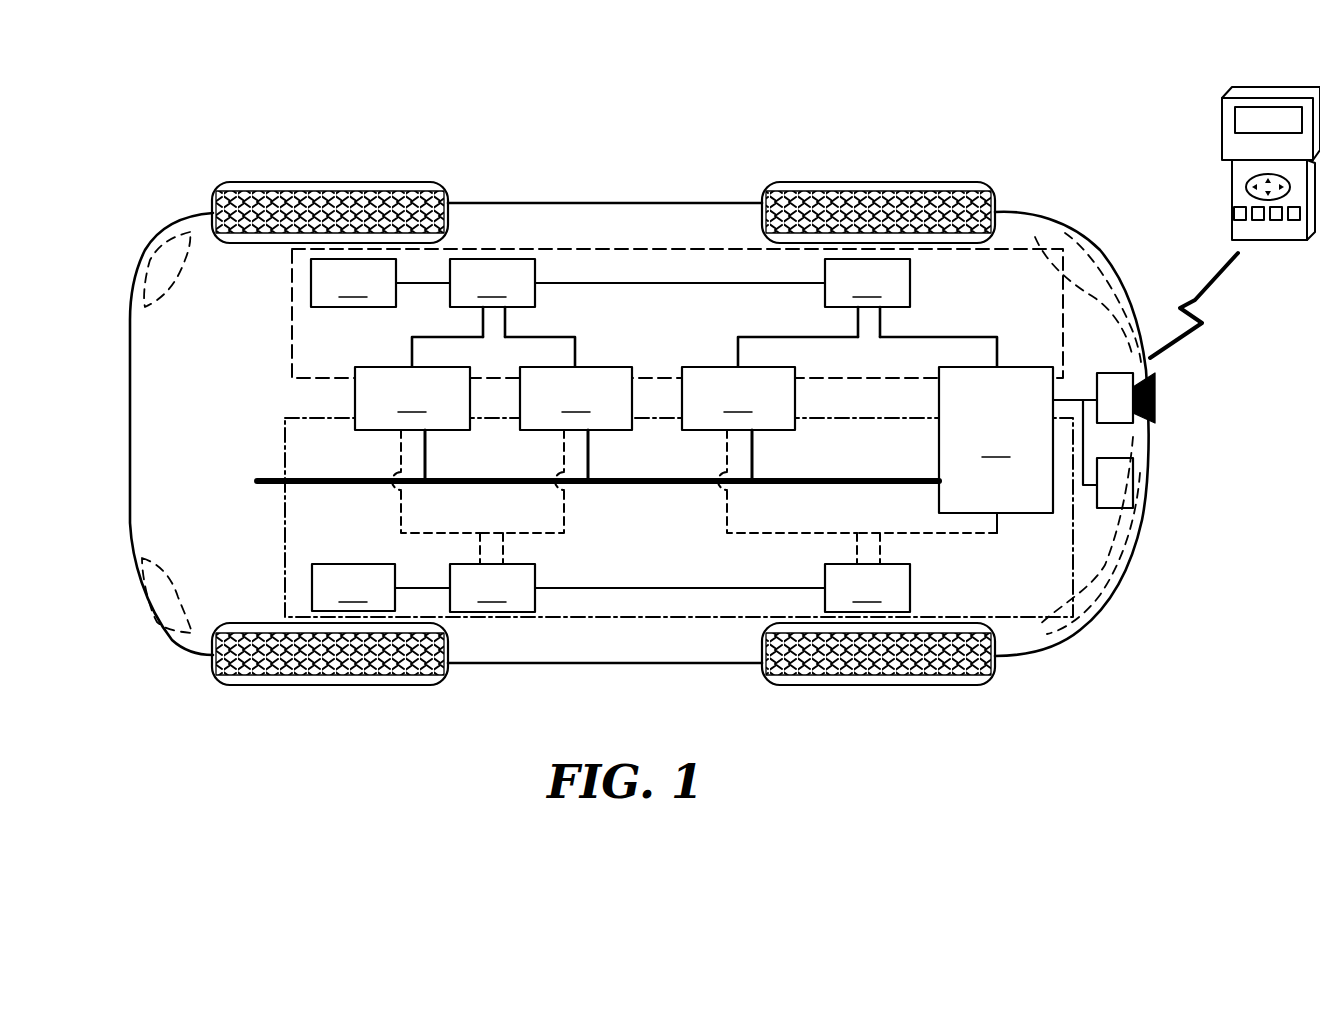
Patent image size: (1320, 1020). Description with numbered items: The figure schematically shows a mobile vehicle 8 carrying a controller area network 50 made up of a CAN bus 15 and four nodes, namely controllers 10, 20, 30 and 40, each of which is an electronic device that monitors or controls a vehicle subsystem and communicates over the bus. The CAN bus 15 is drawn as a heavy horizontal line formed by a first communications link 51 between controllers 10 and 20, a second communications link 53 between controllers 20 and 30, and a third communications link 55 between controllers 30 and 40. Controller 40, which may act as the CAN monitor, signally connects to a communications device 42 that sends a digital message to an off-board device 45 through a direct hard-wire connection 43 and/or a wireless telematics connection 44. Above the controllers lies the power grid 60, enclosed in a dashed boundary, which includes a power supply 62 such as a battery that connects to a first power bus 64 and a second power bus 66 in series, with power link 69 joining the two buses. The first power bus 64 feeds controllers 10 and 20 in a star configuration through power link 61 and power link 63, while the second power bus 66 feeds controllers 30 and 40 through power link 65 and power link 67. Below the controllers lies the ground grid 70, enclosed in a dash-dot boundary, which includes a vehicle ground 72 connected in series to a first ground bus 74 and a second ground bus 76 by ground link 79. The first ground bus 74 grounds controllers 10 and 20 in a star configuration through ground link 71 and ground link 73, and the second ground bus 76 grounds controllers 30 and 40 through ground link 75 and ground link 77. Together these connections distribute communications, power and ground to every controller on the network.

The mobile vehicle 8 is at (128, 435).
The controller 10 is at (412, 424).
The CAN bus 15 is at (569, 467).
The controller 20 is at (576, 424).
The controller 30 is at (738, 424).
The controller 40 is at (1018, 450).
The communications device 42 is at (1195, 345).
The direct hard-wire connection 43 is at (1122, 483).
The wireless telematics connection 44 is at (1143, 400).
The off-board device 45 is at (1220, 150).
The controller area network 50 is at (272, 470).
The first communications link 51 is at (518, 484).
The second communications link 53 is at (630, 484).
The third communications link 55 is at (880, 484).
The power grid 60 is at (288, 383).
The power link 61 is at (410, 350).
The power supply 62 is at (353, 283).
The power link 63 is at (578, 353).
The first power bus 64 is at (465, 298).
The power link 65 is at (797, 335).
The second power bus 66 is at (867, 298).
The power link 67 is at (930, 335).
The power link 69 is at (660, 283).
The ground grid 70 is at (283, 547).
The ground link 71 is at (398, 512).
The vehicle ground 72 is at (353, 587).
The ground link 73 is at (570, 516).
The first ground bus 74 is at (465, 588).
The ground link 75 is at (790, 537).
The second ground bus 76 is at (867, 588).
The ground link 77 is at (933, 537).
The ground link 79 is at (609, 588).